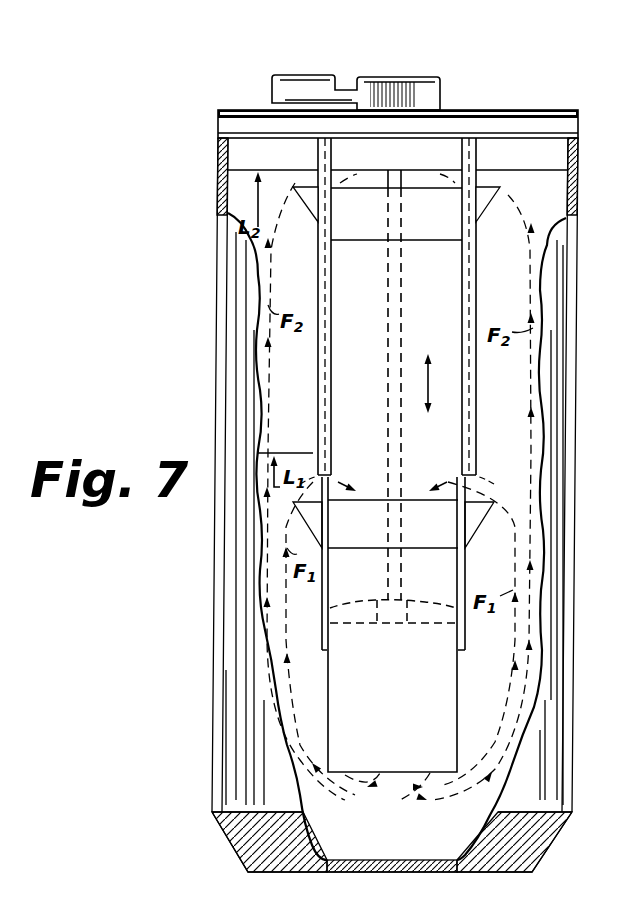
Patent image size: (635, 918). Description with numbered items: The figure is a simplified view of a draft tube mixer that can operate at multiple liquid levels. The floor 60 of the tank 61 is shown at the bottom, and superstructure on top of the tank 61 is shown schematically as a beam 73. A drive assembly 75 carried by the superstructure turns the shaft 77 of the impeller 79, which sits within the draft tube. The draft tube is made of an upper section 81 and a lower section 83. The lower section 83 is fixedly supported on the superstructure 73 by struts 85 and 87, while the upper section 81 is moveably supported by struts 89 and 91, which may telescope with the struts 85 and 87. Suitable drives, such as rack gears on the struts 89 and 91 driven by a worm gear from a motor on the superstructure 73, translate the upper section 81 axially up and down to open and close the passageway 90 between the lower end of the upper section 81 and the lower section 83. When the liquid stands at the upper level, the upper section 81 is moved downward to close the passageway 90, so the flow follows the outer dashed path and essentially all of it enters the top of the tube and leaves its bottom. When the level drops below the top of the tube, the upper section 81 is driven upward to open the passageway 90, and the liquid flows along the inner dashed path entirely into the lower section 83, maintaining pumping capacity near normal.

The floor 60 is at (352, 859).
The tank 61 is at (576, 605).
The beam 73 is at (527, 125).
The drive assembly 75 is at (382, 80).
The shaft 77 is at (387, 324).
The impeller 79 is at (356, 622).
The upper section 81 is at (450, 379).
The lower section 83 is at (446, 667).
The strut 85 is at (276, 634).
The strut 87 is at (468, 532).
The strut 89 is at (316, 356).
The passageway 90 is at (462, 488).
The strut 91 is at (477, 292).